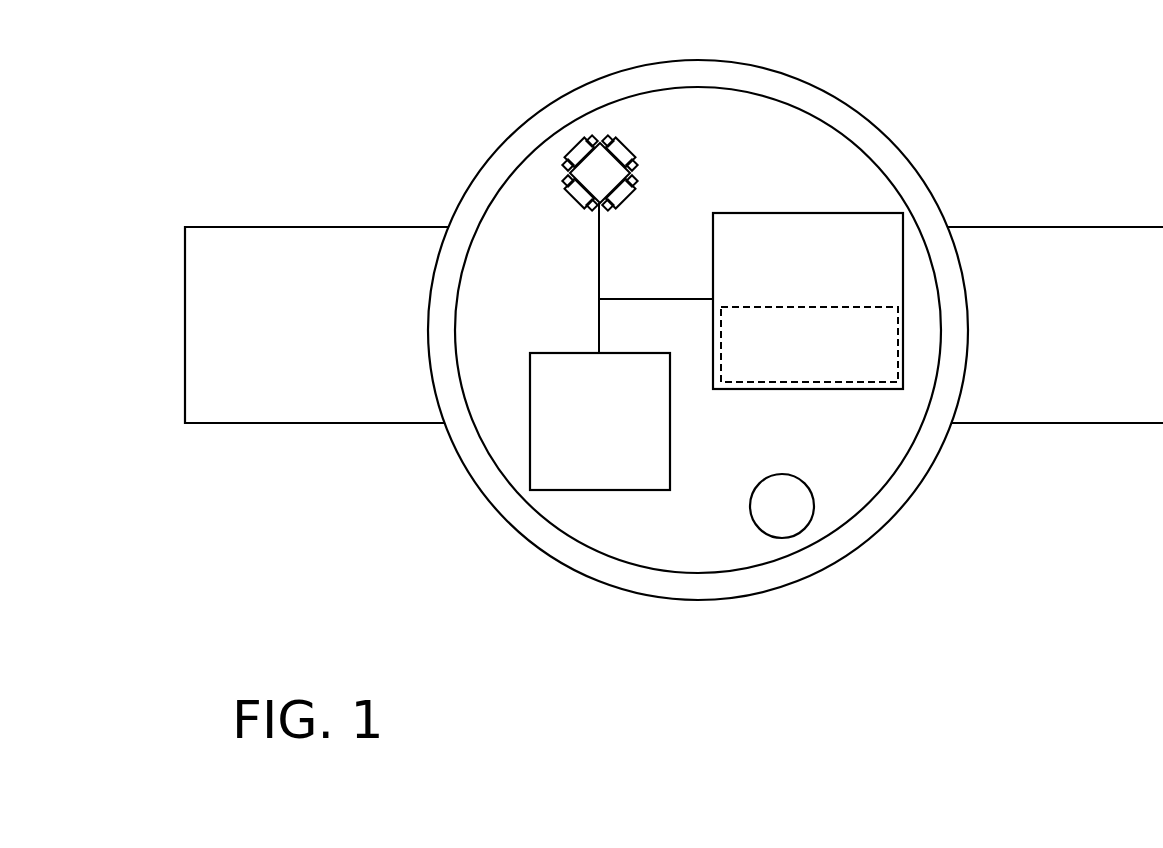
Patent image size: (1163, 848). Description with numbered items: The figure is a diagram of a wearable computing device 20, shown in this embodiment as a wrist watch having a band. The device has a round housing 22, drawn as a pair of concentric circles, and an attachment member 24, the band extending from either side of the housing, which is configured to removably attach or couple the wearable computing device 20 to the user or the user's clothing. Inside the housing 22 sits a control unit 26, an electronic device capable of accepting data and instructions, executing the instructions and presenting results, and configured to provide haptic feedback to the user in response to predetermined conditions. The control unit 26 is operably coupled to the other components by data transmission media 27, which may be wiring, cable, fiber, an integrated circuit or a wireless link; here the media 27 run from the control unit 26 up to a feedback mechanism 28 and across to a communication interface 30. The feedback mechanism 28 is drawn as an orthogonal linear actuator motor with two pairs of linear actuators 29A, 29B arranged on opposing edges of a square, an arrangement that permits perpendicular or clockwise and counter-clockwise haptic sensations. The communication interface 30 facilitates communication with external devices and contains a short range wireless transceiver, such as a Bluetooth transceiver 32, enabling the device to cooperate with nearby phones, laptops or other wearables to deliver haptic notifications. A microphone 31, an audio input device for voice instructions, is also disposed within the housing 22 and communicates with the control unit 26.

The wearable computing device 20 is at (620, 638).
The housing 22 is at (492, 150).
The attachment member 24 is at (293, 427).
The control unit 26 is at (628, 494).
The data transmission media 27 is at (598, 325).
The feedback mechanism 28 is at (607, 120).
The linear actuators 29A is at (625, 148).
The linear actuators 29B is at (570, 148).
The communication interface 30 is at (797, 212).
The microphone 31 is at (797, 535).
The Bluetooth transceiver 32 is at (857, 393).